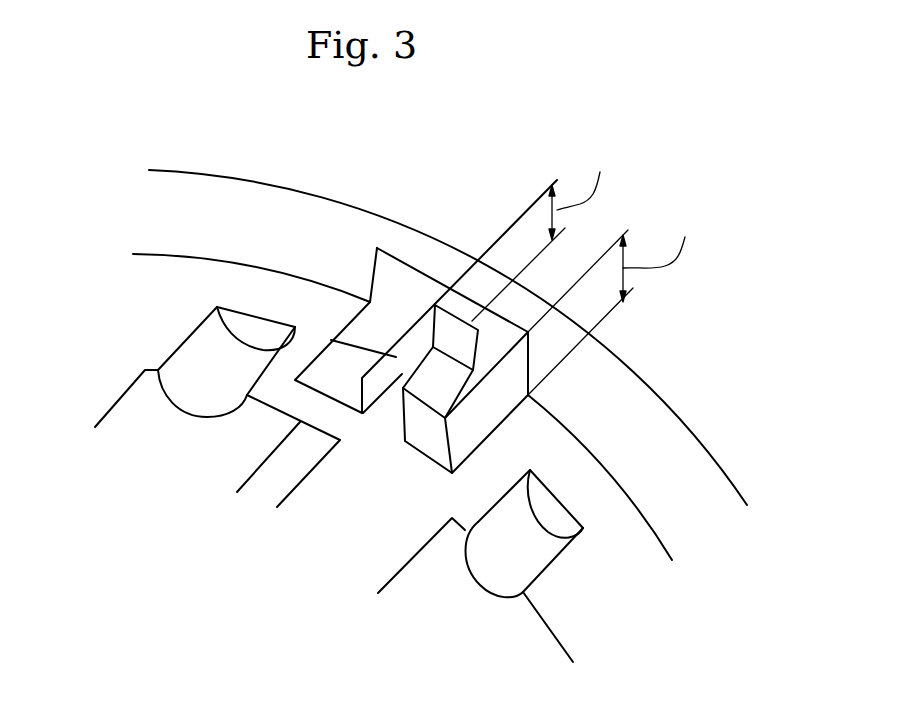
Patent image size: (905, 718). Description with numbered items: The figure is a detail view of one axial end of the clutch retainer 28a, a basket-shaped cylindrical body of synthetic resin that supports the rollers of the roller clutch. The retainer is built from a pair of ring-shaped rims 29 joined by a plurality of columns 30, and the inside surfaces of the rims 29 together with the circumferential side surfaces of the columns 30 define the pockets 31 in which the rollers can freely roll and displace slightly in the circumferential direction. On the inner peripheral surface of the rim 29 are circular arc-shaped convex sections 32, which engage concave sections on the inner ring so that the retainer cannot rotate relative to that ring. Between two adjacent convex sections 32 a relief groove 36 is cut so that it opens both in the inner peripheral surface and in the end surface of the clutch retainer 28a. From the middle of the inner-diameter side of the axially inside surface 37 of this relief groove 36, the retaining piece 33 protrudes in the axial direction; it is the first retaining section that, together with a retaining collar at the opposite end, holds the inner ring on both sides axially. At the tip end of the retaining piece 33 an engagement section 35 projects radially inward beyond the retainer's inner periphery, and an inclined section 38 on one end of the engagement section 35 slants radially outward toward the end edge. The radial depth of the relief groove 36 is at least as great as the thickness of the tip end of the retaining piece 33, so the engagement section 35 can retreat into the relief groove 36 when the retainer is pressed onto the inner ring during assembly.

The clutch retainer 28a is at (625, 412).
The rim 29 is at (172, 277).
The column 30 is at (318, 512).
The pocket 31 is at (128, 393).
The convex section 32 is at (217, 348).
The retaining piece 33 is at (397, 360).
The engagement section 35 is at (402, 373).
The relief groove 36 is at (410, 283).
The axially inside surface 37 is at (332, 367).
The inclined section 38 is at (453, 383).